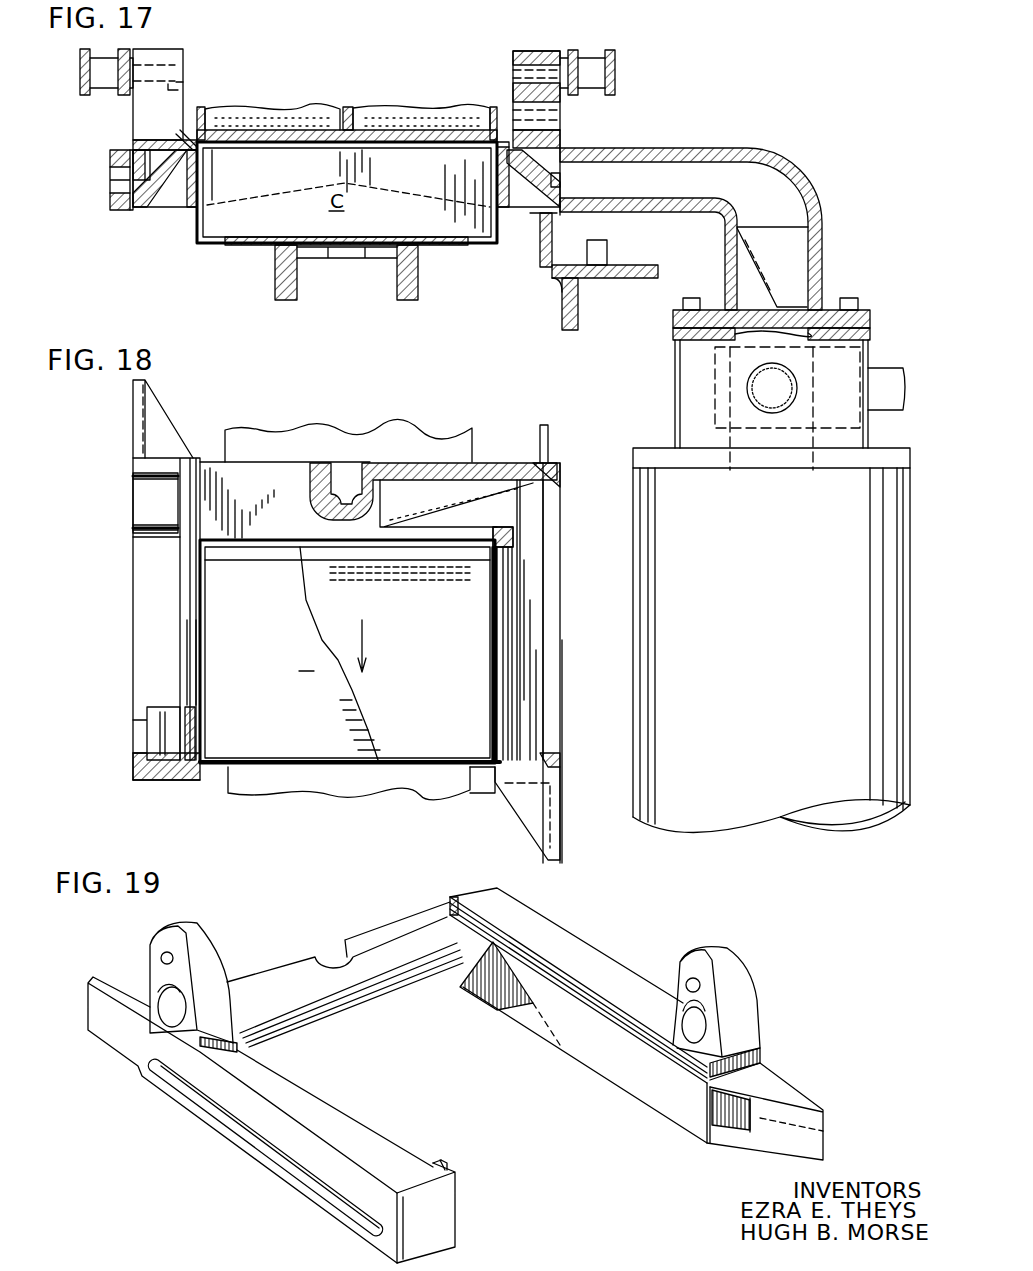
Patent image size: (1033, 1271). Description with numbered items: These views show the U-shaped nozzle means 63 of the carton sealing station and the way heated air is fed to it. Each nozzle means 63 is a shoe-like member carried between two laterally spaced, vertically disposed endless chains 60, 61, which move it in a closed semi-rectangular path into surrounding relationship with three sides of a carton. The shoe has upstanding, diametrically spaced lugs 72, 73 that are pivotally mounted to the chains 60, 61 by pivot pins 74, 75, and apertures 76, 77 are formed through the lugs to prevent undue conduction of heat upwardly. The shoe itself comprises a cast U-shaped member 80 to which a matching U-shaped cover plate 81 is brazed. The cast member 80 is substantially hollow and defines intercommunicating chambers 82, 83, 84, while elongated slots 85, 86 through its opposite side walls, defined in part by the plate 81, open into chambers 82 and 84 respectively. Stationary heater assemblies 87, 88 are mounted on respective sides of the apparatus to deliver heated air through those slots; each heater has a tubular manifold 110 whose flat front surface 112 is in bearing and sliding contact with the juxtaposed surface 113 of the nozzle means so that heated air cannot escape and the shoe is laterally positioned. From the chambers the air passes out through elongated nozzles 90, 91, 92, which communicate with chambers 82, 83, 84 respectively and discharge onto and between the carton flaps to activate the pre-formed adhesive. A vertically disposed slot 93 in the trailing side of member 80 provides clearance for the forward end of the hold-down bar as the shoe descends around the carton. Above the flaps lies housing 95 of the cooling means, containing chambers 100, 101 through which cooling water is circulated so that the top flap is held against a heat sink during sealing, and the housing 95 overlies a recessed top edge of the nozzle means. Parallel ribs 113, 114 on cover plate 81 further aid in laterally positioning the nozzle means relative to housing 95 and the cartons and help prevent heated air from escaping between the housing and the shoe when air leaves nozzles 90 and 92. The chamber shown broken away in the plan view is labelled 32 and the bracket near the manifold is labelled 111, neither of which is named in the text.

In FIG. 17, the chamber housing 32 is at (228, 245).
In FIG. 18, the chamber housing 32 is at (240, 437).
In FIG. 17, the endless chain 60 is at (80, 57).
In FIG. 17, the endless chain 61 is at (615, 58).
In FIG. 17, the nozzle means 63 is at (158, 212).
In FIG. 18, the nozzle means 63 is at (130, 468).
In FIG. 19, the nozzle means 63 is at (567, 923).
In FIG. 17, the lug 72 is at (183, 58).
In FIG. 18, the lug 72 is at (137, 510).
In FIG. 19, the lug 72 is at (210, 958).
In FIG. 17, the lug 73 is at (513, 57).
In FIG. 19, the lug 73 is at (743, 1005).
In FIG. 17, the pivot pin 74 is at (183, 85).
In FIG. 17, the pivot pin 75 is at (513, 75).
In FIG. 17, the aperture 76 is at (560, 112).
In FIG. 19, the aperture 76 is at (717, 1027).
In FIG. 19, the aperture 77 is at (158, 990).
In FIG. 18, the cast U-shaped member 80 is at (560, 463).
In FIG. 19, the cast U-shaped member 80 is at (455, 1227).
In FIG. 18, the U-shaped cover plate 81 is at (242, 477).
In FIG. 19, the U-shaped cover plate 81 is at (455, 1175).
In FIG. 17, the chamber 82 is at (548, 152).
In FIG. 18, the chamber 82 is at (530, 667).
In FIG. 18, the chamber 83 is at (410, 492).
In FIG. 17, the chamber 84 is at (137, 143).
In FIG. 18, the chamber 84 is at (145, 761).
In FIG. 17, the slot 85 is at (552, 175).
In FIG. 18, the slot 85 is at (555, 698).
In FIG. 17, the slot 86 is at (140, 177).
In FIG. 18, the slot 86 is at (138, 728).
In FIG. 19, the slot 86 is at (322, 1182).
In FIG. 17, the heater assembly 87 is at (481, 461).
In FIG. 17, the heater assembly 88 is at (122, 195).
In FIG. 17, the nozzle 90 is at (508, 146).
In FIG. 18, the nozzle 90 is at (503, 680).
In FIG. 19, the nozzle 90 is at (533, 973).
In FIG. 18, the nozzle 91 is at (443, 535).
In FIG. 19, the nozzle 91 is at (430, 973).
In FIG. 17, the nozzle 92 is at (181, 144).
In FIG. 18, the nozzle 92 is at (193, 720).
In FIG. 18, the slot 93 is at (333, 477).
In FIG. 19, the slot 93 is at (317, 955).
In FIG. 17, the housing 95 is at (343, 108).
In FIG. 17, the chamber 100 is at (290, 108).
In FIG. 17, the chamber 101 is at (400, 108).
In FIG. 17, the tubular manifold 110 is at (810, 180).
In FIG. 17, the mounting bracket 111 is at (556, 213).
In FIG. 17, the front surface 112 is at (567, 185).
In FIG. 17, the surface / rib 113 is at (500, 125).
In FIG. 19, the surface / rib 113 is at (447, 900).
In FIG. 17, the rib 114 is at (190, 137).
In FIG. 18, the rib 114 is at (187, 687).
In FIG. 19, the rib 114 is at (448, 1165).